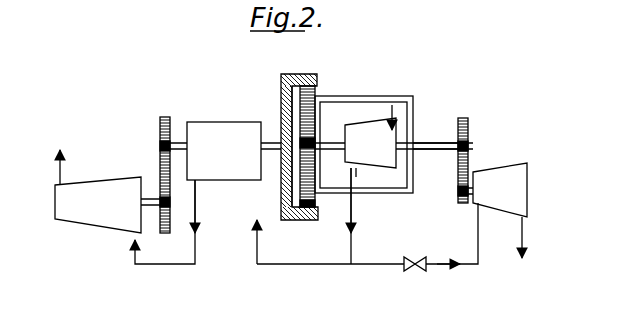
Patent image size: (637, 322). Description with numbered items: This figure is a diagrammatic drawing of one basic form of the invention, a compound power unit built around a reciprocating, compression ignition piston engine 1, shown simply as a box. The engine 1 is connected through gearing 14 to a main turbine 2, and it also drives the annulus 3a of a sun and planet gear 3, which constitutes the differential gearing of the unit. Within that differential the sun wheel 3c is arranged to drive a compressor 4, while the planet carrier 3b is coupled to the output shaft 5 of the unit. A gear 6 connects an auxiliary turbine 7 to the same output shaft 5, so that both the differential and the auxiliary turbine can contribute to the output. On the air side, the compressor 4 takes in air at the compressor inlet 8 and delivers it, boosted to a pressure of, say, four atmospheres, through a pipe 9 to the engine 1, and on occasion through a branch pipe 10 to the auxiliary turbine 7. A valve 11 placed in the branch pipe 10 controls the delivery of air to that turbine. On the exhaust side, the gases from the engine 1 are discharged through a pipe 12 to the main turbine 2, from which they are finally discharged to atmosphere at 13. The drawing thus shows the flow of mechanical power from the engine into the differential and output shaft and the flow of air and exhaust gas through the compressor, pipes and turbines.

The reciprocating compression ignition piston engine 1 is at (227, 130).
The main turbine 2 is at (105, 183).
The sun and planet gear 3 is at (288, 71).
The annulus 3a is at (281, 91).
The planet carrier 3b is at (335, 99).
The sun wheel 3c is at (314, 142).
The compressor 4 is at (382, 160).
The output shaft 5 is at (436, 146).
The gear 6 is at (468, 132).
The auxiliary turbine 7 is at (511, 178).
The compressor inlet 8 is at (390, 112).
The pipe 9 is at (314, 265).
The branch pipe 10 is at (470, 266).
The valve 11 is at (417, 272).
The pipe 12 is at (169, 265).
The discharge to atmosphere 13 is at (59, 165).
The gearing 14 is at (160, 174).